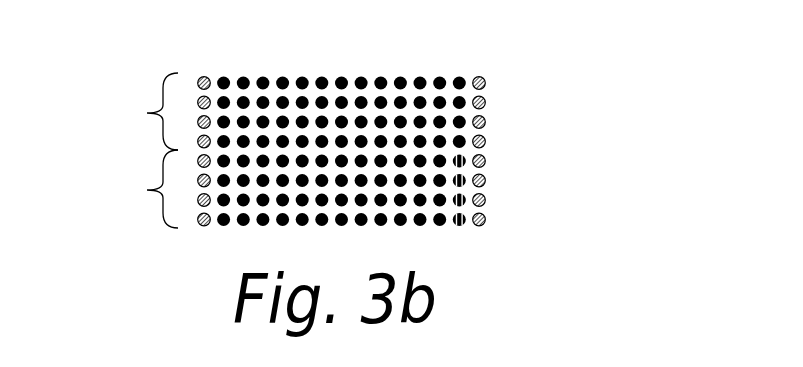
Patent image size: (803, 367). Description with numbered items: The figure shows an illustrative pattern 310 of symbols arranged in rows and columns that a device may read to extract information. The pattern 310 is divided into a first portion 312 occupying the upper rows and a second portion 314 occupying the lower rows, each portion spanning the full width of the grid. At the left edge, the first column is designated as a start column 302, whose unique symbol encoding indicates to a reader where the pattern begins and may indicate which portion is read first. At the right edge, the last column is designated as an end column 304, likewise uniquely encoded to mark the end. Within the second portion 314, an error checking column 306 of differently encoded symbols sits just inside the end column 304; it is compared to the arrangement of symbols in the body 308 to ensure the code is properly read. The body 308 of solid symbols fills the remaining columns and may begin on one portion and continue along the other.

The start column 302 is at (203, 64).
The end column 304 is at (485, 62).
The error checking column 306 is at (460, 233).
The body 308 is at (332, 62).
The pattern 310 is at (533, 123).
The first portion 312 is at (147, 113).
The second portion 314 is at (147, 190).